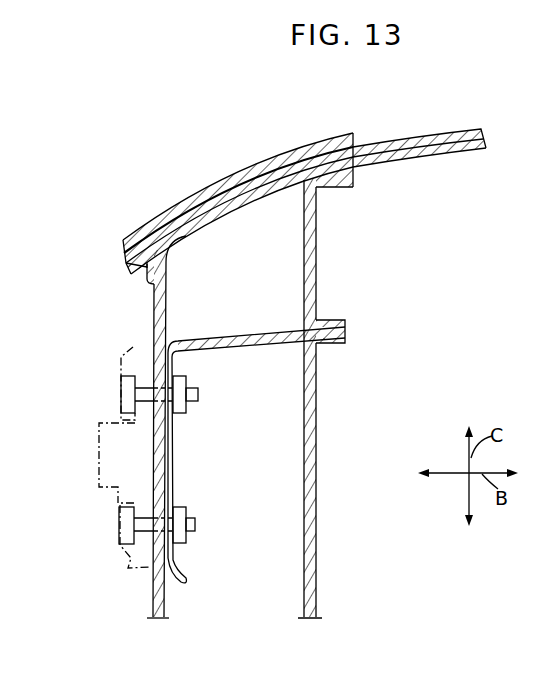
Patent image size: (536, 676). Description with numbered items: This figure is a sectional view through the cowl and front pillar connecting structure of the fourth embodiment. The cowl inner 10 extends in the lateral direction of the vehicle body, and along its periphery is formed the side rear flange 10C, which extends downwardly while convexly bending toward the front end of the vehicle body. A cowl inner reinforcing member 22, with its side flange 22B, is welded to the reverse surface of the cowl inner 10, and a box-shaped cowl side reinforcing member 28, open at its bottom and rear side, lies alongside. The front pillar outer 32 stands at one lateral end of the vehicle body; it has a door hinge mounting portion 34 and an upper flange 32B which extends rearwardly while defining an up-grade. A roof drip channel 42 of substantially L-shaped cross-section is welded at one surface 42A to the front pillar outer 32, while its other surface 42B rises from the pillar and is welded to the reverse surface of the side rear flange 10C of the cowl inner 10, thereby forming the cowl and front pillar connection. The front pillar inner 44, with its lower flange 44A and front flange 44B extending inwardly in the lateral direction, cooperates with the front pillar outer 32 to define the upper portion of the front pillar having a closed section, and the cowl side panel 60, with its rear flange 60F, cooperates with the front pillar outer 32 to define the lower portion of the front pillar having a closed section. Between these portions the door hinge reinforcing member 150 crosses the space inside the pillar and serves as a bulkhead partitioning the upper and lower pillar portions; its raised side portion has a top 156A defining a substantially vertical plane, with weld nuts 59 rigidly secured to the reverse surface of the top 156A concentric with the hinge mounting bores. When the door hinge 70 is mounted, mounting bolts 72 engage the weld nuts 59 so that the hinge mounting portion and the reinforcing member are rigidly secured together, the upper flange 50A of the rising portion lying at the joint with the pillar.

The cowl inner 10 is at (477, 127).
The side rear flange 10C is at (124, 242).
The cowl inner reinforcing member 22 is at (480, 155).
The side flange 22B is at (362, 162).
The cowl side reinforcing member 28 is at (197, 192).
The front pillar outer 32 is at (166, 308).
The upper flange 32B is at (313, 150).
The door hinge mounting portion 34 is at (153, 466).
The roof drip channel 42 is at (125, 275).
The one surface 42A is at (162, 271).
The other surface 42B is at (133, 270).
The front pillar inner 44 is at (318, 262).
The lower flange 44A is at (343, 322).
The front flange 44B is at (339, 183).
The upper flange 50A is at (346, 334).
The weld nuts 59 is at (188, 381).
The cowl side panel 60 is at (318, 437).
The rear flange 60F is at (335, 346).
The door hinge 70 is at (98, 492).
The mounting bolts 72 is at (120, 393).
The door hinge reinforcing member 150 is at (261, 336).
The top 156A is at (170, 438).